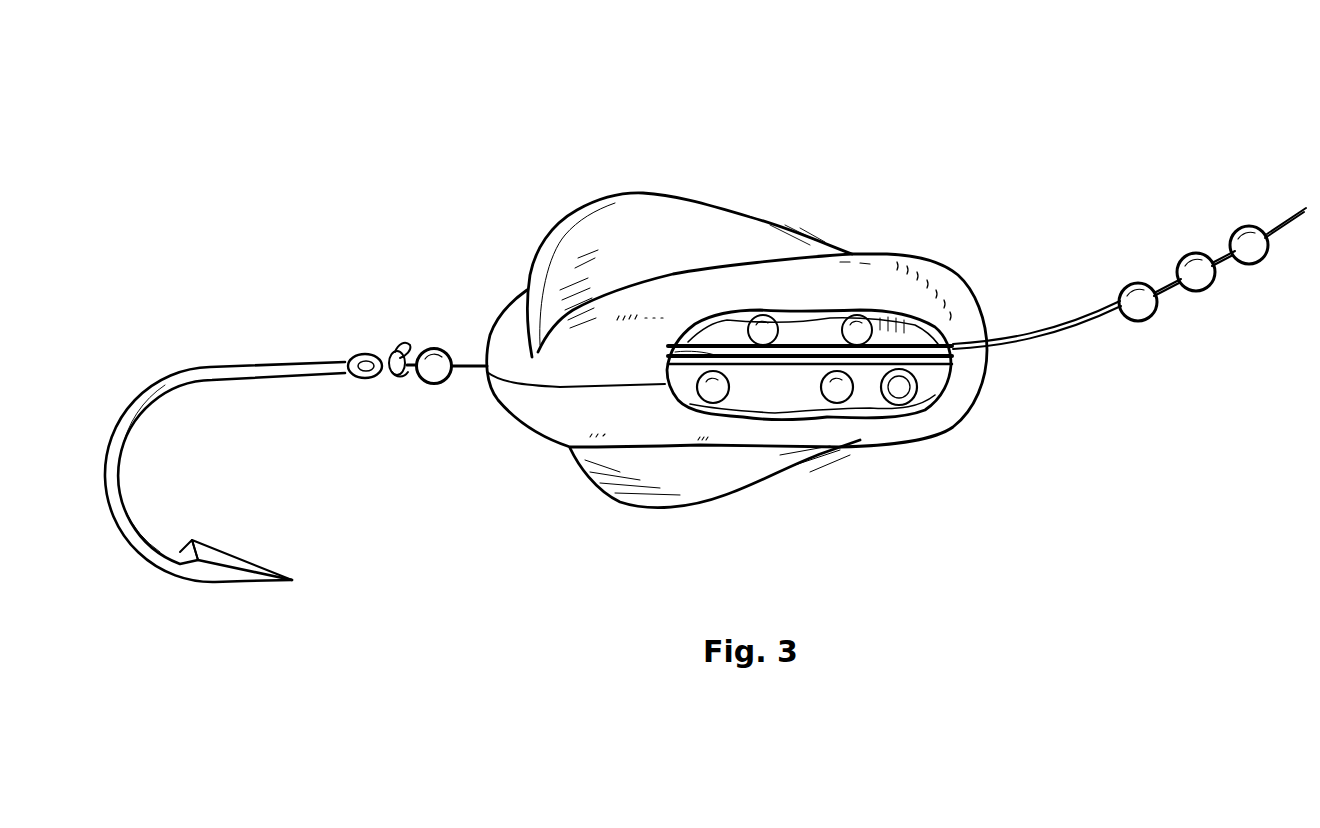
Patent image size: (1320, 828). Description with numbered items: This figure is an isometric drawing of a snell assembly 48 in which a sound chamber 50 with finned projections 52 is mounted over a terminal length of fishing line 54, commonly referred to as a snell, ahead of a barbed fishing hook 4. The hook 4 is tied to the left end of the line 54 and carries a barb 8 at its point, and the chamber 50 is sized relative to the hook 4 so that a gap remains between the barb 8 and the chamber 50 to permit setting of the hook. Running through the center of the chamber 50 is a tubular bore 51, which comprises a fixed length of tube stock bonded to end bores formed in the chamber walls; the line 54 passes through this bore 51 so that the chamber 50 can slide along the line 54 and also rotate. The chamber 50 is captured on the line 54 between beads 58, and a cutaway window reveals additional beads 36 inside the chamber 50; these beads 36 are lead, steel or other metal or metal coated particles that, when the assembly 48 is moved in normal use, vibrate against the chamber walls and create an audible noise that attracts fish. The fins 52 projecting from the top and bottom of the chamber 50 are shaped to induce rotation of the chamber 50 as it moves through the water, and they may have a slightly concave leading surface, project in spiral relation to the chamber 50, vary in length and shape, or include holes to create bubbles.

The barbed fishing hook 4 is at (245, 582).
The barb 8 is at (198, 553).
The beads 36 is at (847, 397).
The snell assembly 48 is at (378, 130).
The sound chamber 50 is at (943, 263).
The tubular bore 51 is at (823, 363).
The finned projections 52 is at (683, 198).
The fishing line 54 is at (1062, 340).
The beads 58 is at (437, 384).